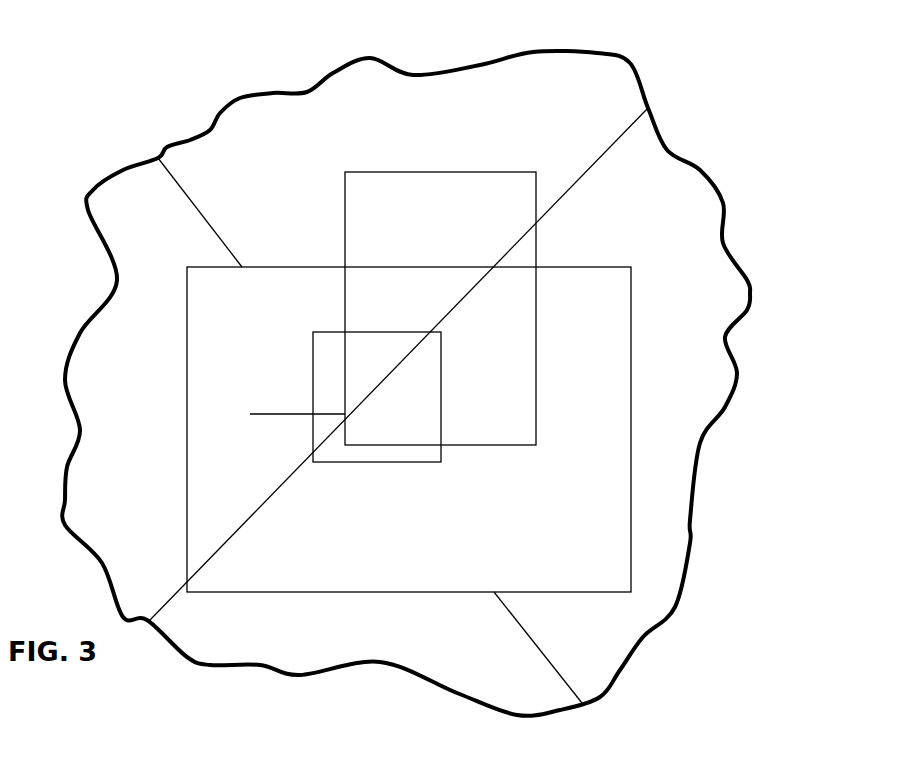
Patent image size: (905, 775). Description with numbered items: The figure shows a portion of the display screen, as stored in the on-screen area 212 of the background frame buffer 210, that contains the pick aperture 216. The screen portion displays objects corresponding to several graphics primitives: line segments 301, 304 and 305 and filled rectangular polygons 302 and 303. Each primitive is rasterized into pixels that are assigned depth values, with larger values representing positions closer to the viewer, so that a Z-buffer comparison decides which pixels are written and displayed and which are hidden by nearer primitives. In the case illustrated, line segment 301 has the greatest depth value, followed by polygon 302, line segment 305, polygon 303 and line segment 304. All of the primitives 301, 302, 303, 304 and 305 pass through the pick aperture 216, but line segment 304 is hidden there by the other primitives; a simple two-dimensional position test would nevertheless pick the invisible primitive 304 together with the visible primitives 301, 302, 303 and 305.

The background frame buffer 210 is at (757, 297).
The on-screen area 212 is at (643, 221).
The pick aperture 216 is at (390, 332).
The line segment primitive 301 is at (601, 147).
The filled rectangular polygon primitive 302 is at (393, 172).
The filled rectangular polygon primitive 303 is at (186, 387).
The line segment primitive 304 is at (540, 660).
The line segment primitive 305 is at (270, 414).